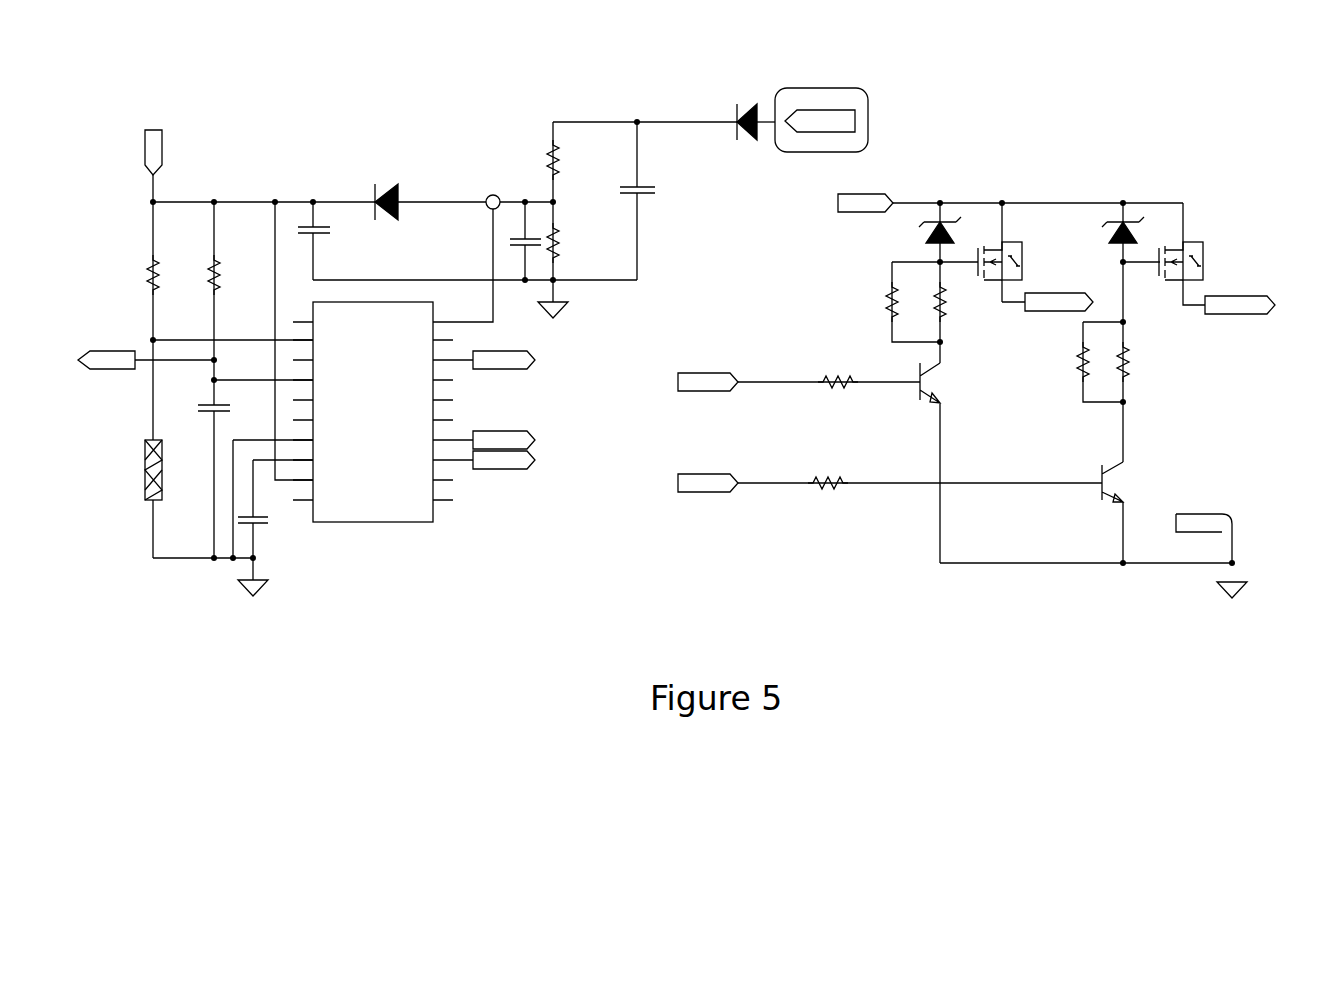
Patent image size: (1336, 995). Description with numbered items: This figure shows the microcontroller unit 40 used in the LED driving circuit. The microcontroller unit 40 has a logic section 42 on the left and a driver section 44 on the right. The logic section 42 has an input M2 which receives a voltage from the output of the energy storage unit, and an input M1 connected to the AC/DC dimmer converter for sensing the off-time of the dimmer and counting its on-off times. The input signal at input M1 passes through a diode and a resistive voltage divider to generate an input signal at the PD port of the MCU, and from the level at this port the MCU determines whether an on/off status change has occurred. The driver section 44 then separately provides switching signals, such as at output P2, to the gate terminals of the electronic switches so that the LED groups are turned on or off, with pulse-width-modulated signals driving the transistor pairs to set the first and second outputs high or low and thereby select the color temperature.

The microcontroller unit 40 is at (1240, 186).
The logic section 42 is at (370, 652).
The driver section 44 is at (975, 617).
The input M1 is at (852, 112).
The input M2 is at (136, 134).
The output P2 is at (1253, 312).